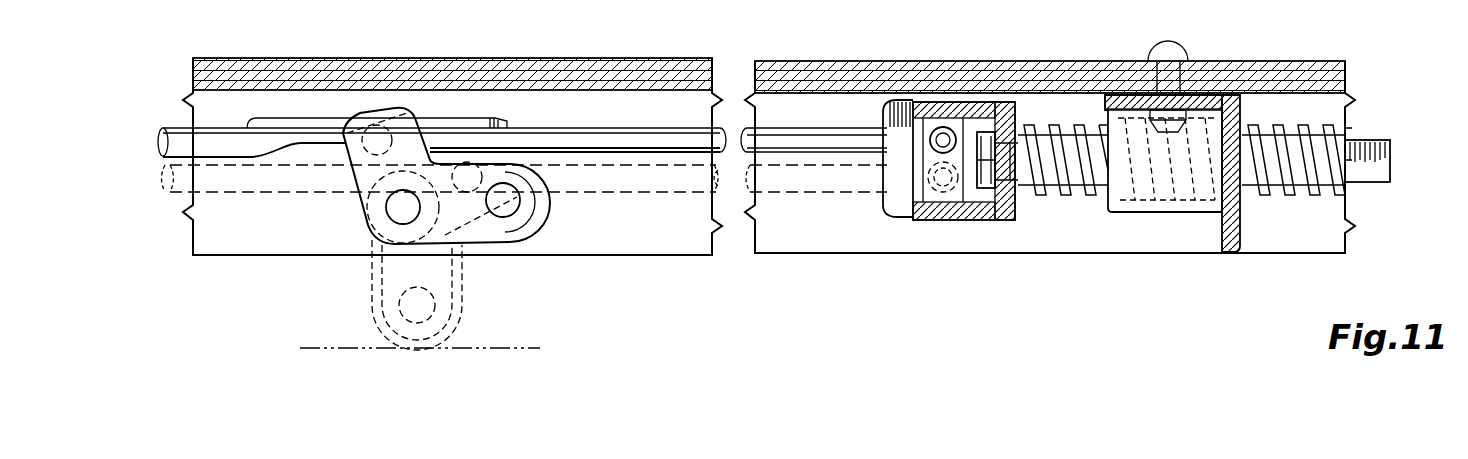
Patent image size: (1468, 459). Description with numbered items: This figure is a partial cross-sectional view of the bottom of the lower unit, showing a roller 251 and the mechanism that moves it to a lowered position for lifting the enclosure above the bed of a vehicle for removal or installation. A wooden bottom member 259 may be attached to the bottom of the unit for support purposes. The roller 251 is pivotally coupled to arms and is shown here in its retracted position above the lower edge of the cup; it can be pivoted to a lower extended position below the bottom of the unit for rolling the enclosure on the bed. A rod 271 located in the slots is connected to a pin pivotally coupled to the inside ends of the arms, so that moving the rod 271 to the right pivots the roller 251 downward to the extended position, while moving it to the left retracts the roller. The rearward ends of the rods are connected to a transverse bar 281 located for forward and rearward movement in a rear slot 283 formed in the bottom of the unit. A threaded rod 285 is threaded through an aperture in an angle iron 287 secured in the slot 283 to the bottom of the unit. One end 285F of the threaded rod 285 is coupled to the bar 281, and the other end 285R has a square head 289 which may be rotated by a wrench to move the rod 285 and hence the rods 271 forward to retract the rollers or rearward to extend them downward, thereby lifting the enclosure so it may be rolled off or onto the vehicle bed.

The wooden bottom member 259 is at (590, 58).
The rod 271 is at (657, 157).
The roller 251 is at (553, 218).
The rear slot 283 is at (825, 230).
The transverse bar 281 is at (937, 217).
The one end of the threaded rod 285F is at (985, 190).
The threaded rod 285 is at (1303, 197).
The angle iron 287 is at (1217, 237).
The other end of the threaded rod 285R is at (1353, 130).
The square head 289 is at (1380, 165).